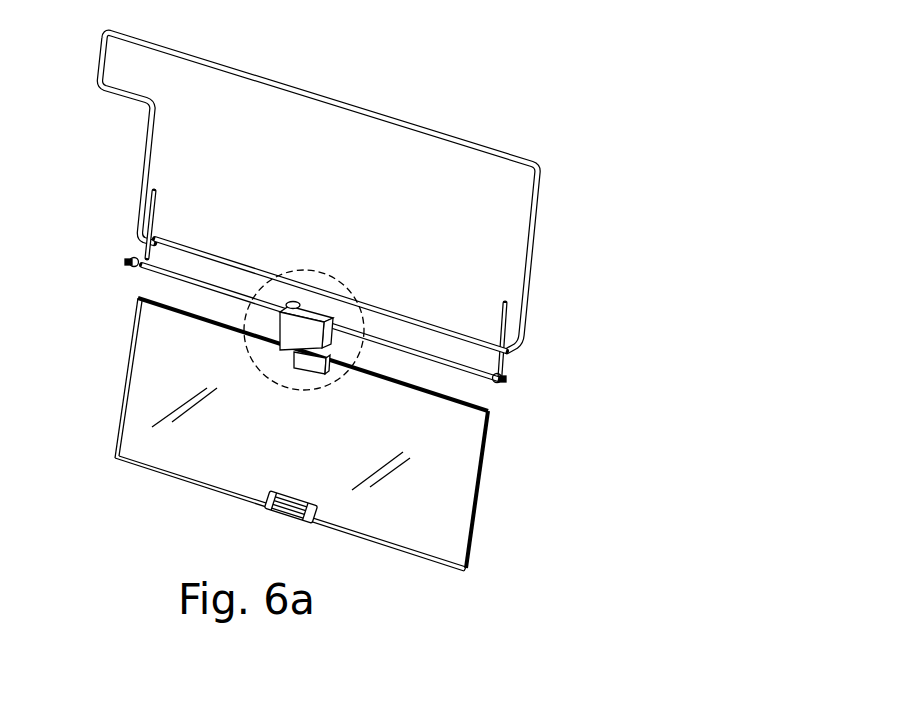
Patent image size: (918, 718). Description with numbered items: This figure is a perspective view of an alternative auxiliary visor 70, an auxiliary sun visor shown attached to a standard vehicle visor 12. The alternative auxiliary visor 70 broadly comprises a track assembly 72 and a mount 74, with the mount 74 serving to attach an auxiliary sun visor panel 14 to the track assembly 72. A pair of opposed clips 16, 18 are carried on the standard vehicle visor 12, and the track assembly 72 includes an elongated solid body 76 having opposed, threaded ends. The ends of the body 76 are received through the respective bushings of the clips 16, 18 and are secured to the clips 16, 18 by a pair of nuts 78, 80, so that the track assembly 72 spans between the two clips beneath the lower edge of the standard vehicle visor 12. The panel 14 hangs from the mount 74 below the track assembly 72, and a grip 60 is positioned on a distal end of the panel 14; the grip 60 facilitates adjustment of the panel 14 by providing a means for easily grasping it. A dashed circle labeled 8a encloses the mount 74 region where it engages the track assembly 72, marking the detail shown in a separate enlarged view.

The standard vehicle visor 12 is at (297, 160).
The auxiliary sun visor panel 14 is at (447, 503).
The clip 16 is at (157, 208).
The clip 18 is at (505, 328).
The grip 60 is at (303, 523).
The alternative auxiliary visor 70 is at (88, 310).
The track assembly 72 is at (413, 331).
The mount 74 is at (293, 325).
The elongated solid body 76 is at (458, 360).
The nut 78 is at (131, 256).
The nut 80 is at (507, 369).
The detail region of FIG. 8a is at (336, 289).